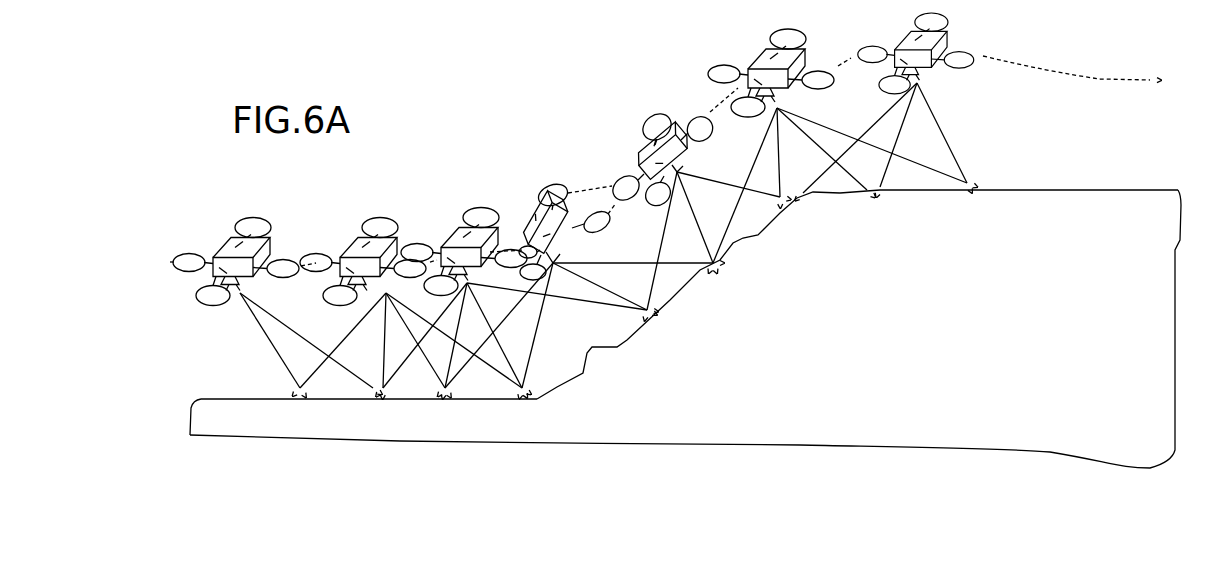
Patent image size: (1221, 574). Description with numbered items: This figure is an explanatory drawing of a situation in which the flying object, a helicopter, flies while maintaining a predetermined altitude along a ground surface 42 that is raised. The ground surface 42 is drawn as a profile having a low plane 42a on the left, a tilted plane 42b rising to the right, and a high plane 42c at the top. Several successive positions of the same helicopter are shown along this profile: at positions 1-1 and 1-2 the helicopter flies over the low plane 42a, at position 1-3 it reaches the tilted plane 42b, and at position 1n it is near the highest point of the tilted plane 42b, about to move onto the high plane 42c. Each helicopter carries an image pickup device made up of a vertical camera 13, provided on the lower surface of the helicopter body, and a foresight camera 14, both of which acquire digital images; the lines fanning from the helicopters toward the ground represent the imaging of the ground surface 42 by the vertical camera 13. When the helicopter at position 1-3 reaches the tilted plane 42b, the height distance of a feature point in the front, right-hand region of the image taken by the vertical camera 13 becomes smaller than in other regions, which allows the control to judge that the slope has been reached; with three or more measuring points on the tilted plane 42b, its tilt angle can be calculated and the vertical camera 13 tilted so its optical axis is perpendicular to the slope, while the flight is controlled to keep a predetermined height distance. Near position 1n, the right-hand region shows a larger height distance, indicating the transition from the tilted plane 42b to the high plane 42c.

The position of the helicopter 1-1 is at (239, 252).
The position of the helicopter 1-2 is at (342, 258).
The position of the helicopter 1-3 is at (446, 248).
The position of the helicopter 1n is at (810, 54).
The vertical camera 13 is at (245, 283).
The foresight camera 14 is at (256, 258).
The ground surface 42 is at (684, 292).
The low plane 42a is at (195, 399).
The tilted plane 42b is at (690, 283).
The high plane 42c is at (1045, 190).